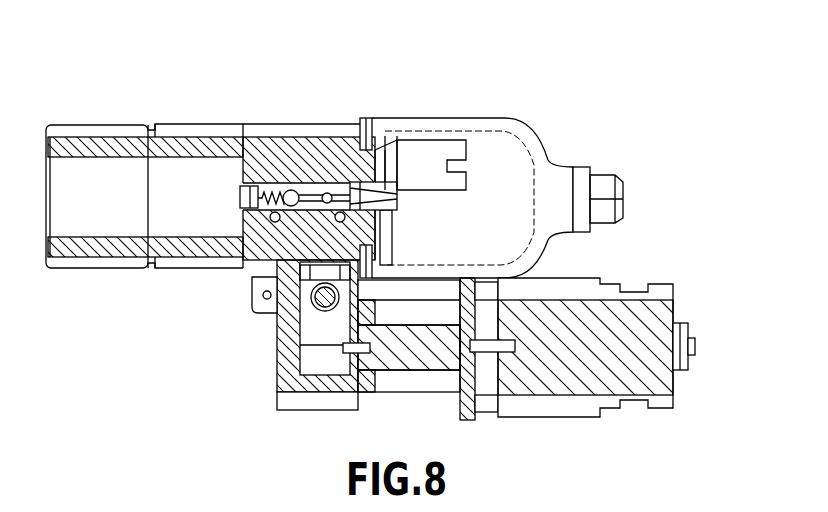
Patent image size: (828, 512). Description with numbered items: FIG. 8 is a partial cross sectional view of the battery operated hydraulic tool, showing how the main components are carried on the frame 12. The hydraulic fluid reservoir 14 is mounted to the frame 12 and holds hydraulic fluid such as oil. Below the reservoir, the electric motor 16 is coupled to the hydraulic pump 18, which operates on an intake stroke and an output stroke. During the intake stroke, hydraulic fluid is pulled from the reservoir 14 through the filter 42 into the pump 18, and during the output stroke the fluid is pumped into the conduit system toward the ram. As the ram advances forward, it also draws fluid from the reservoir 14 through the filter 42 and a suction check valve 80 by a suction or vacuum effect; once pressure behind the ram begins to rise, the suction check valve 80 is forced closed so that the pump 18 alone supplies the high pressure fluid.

The frame 12 is at (200, 142).
The hydraulic fluid reservoir 14 is at (515, 150).
The electric motor 16 is at (668, 384).
The hydraulic pump 18 is at (298, 312).
The filter 42 is at (345, 195).
The suction check valve 80 is at (287, 190).